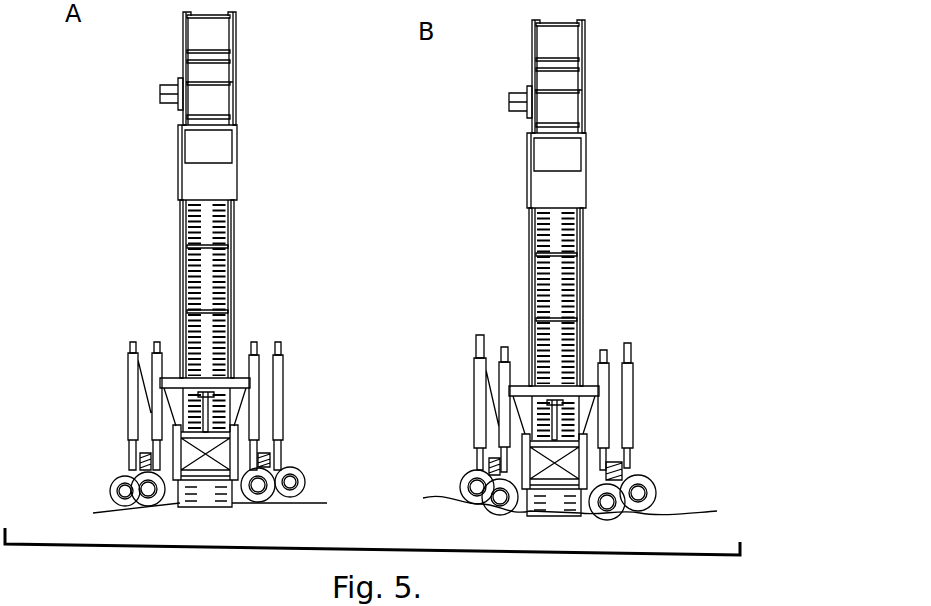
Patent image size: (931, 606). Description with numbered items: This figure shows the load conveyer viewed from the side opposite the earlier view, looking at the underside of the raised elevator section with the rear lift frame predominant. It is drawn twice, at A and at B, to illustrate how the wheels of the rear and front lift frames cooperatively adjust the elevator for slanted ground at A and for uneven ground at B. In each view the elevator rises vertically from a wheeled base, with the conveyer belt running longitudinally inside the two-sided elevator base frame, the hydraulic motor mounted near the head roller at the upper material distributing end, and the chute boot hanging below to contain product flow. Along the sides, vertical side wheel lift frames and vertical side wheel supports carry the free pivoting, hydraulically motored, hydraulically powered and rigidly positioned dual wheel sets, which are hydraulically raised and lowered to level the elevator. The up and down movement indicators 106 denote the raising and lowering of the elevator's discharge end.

The up and down movement indicators 106 is at (372, 567).